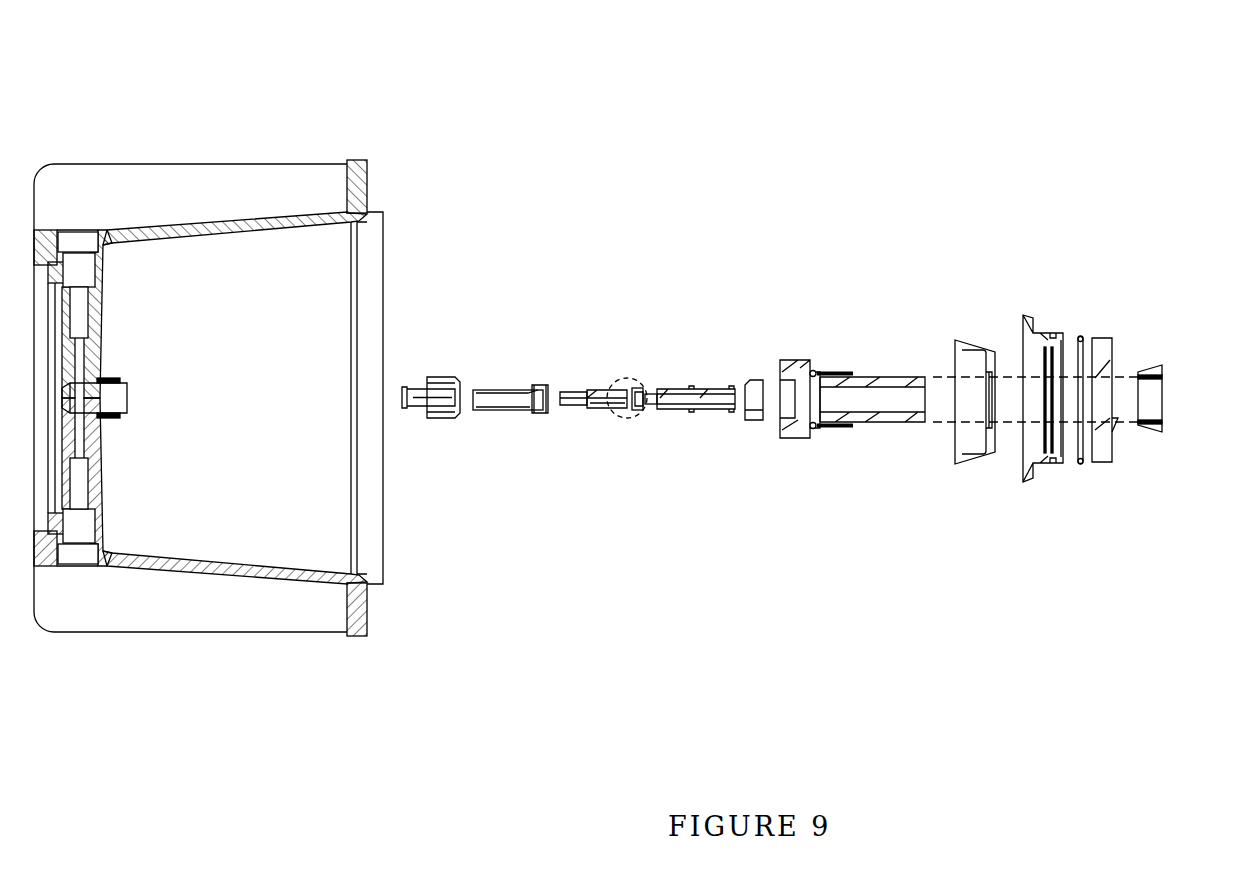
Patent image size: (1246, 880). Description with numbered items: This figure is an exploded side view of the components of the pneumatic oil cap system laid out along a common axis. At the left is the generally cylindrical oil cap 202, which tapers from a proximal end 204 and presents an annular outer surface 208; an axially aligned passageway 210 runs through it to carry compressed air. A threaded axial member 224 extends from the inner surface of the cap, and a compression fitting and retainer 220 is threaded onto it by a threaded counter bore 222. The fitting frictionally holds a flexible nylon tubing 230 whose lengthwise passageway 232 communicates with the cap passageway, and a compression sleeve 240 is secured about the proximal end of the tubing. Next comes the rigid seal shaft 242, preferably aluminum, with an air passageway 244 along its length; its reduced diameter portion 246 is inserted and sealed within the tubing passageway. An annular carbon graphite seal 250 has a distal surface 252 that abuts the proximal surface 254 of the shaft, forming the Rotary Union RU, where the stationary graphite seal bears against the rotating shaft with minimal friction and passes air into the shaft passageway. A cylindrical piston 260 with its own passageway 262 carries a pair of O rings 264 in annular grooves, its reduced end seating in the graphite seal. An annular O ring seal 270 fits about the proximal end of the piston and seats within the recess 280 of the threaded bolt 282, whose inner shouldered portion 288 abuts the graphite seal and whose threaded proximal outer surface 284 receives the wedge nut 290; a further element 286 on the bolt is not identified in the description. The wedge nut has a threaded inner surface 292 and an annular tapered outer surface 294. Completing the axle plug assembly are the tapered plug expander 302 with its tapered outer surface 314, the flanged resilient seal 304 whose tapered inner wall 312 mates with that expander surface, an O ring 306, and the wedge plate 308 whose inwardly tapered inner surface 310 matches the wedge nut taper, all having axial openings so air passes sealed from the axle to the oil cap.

The oil cap 202 is at (220, 164).
The proximal end 204 is at (345, 162).
The annular outer surface 208 is at (82, 228).
The axially aligned passageway 210 is at (108, 395).
The threaded axial member 224 is at (120, 416).
The compression fitting and retainer 220 is at (446, 377).
The threaded counter bore 222 is at (441, 418).
The flexible nylon tubing 230 is at (494, 390).
The passageway 232 is at (510, 400).
The compression sleeve 240 is at (538, 385).
The rigid seal shaft 242 is at (603, 391).
The air passageway 244 is at (602, 407).
The reduced diameter portion 246 is at (573, 406).
The annular carbon graphite seal 250 is at (633, 379).
The Rotary Union RU is at (640, 411).
The distal surface 252 is at (633, 411).
The proximal surface 254 is at (646, 410).
The cylindrical piston 260 is at (673, 389).
The passageway 262 is at (720, 410).
The O rings 264 is at (692, 389).
The annular O ring seal 270 is at (758, 380).
The recess 280 is at (795, 402).
The threaded bolt 282 is at (847, 372).
The threaded proximal outer surface 284 is at (913, 377).
The bolt shank 286 is at (870, 400).
The inner shouldered portion 288 is at (820, 371).
The tapered plug expander 302 is at (970, 343).
The tapered outer surface 314 is at (981, 463).
The flanged resilient seal 304 is at (1031, 332).
The tapered inner wall 312 is at (1043, 460).
The O ring 306 is at (1080, 335).
The wedge plate 308 is at (1101, 338).
The inwardly tapered inner surface 310 is at (1116, 422).
The wedge nut 290 is at (1150, 364).
The threaded inner surface 292 is at (1165, 379).
The annular tapered outer surface 294 is at (1155, 432).